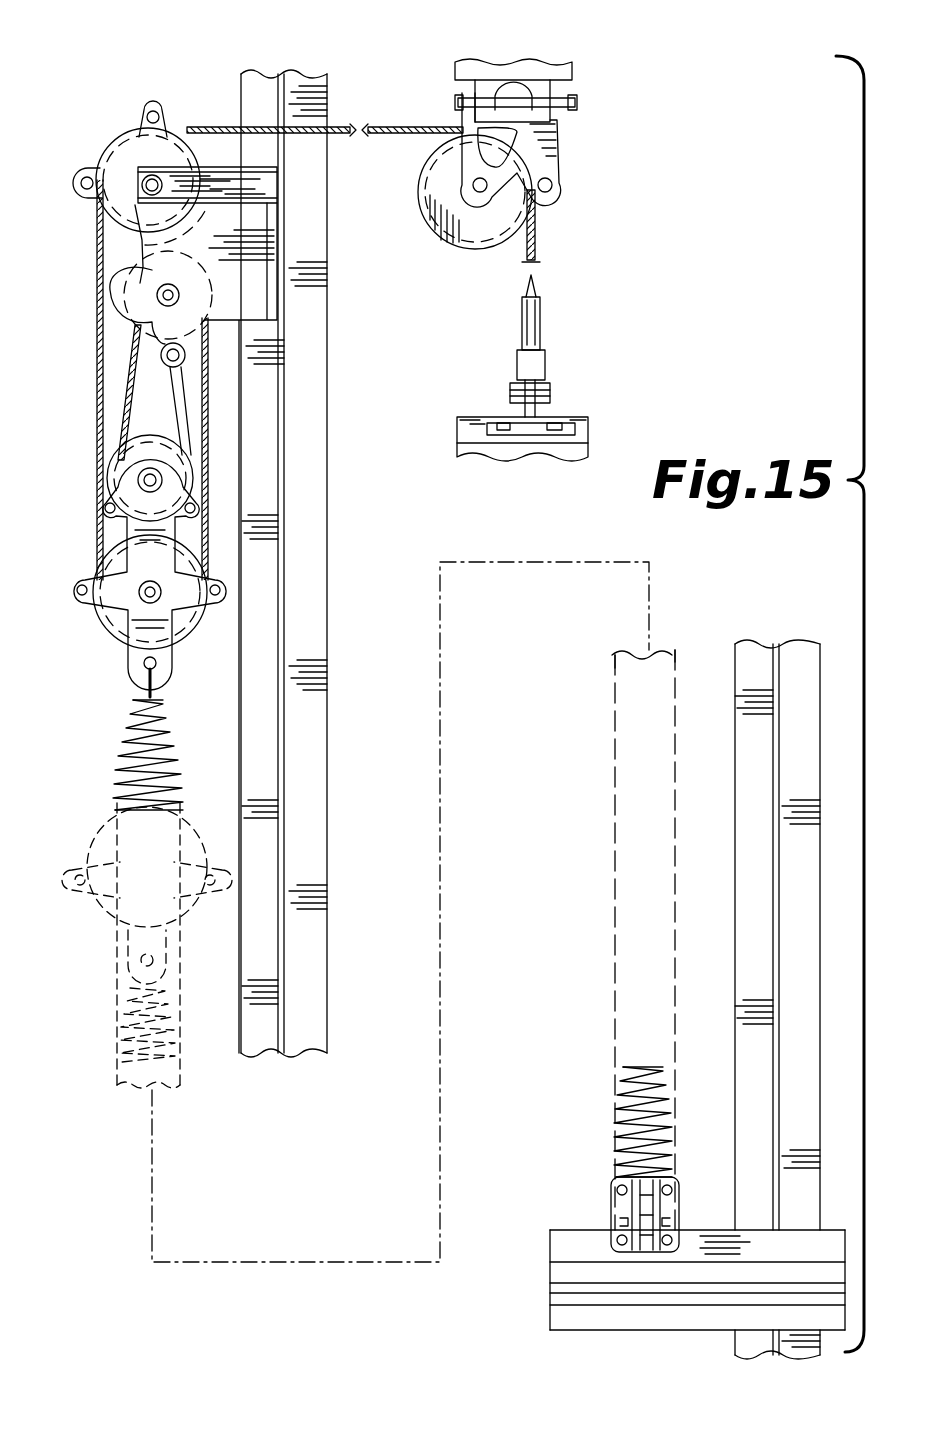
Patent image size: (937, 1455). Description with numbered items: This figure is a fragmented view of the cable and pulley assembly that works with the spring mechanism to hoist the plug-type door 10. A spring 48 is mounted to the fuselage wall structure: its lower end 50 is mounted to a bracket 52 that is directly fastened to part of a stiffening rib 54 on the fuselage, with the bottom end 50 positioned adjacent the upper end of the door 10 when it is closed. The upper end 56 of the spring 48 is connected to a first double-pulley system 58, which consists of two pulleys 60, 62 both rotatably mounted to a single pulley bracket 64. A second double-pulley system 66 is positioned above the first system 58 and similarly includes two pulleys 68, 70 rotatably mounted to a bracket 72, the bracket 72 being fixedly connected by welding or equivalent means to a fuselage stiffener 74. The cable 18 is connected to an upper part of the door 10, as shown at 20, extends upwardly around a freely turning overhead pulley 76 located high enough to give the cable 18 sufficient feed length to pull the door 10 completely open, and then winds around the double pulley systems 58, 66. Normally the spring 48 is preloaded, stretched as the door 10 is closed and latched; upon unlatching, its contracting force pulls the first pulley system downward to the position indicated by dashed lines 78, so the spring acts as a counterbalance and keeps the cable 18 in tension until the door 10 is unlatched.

The plug-type door 10 is at (593, 425).
The cable 18 is at (400, 127).
The cable connection to upper part of door 20 is at (552, 392).
The spring 48 is at (173, 767).
The lower end of spring 50 is at (644, 1207).
The bracket 52 is at (617, 1208).
The stiffening rib 54 is at (563, 1240).
The upper end of spring 56 is at (140, 690).
The first double-pulley system 58 is at (107, 635).
The pulley 60 is at (113, 560).
The pulley 62 is at (123, 460).
The pulley bracket 64 is at (100, 607).
The second double-pulley system 66 is at (107, 141).
The pulley 68 is at (127, 150).
The pulley 70 is at (133, 325).
The bracket 72 is at (147, 217).
The fuselage stiffener 74 is at (257, 80).
The overhead pulley 76 is at (463, 247).
The dashed-line position of pulley system 78 is at (107, 920).